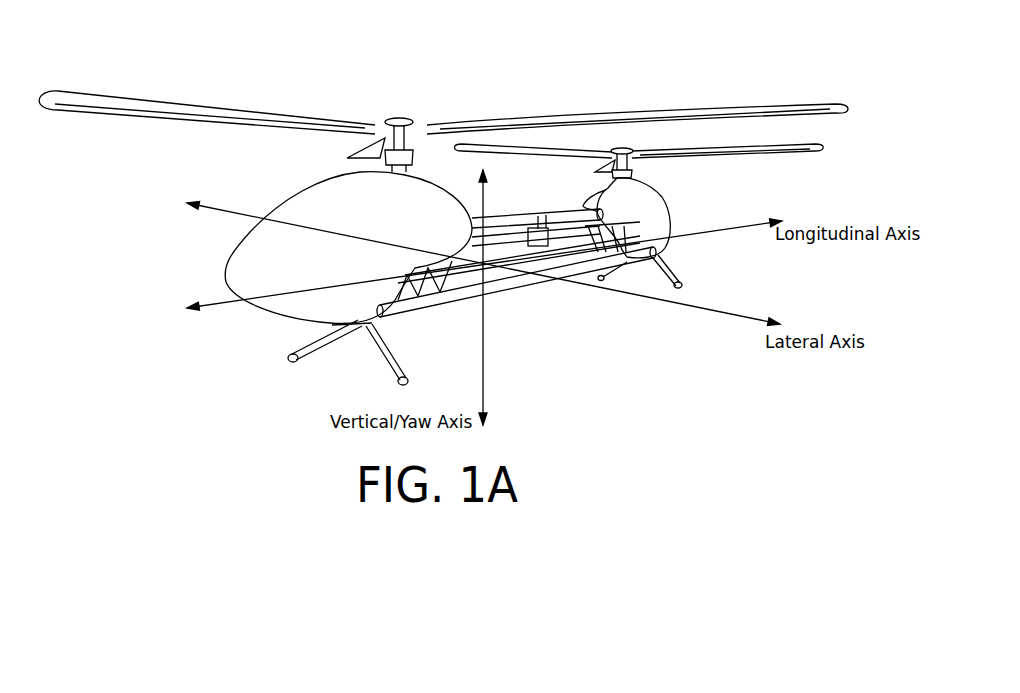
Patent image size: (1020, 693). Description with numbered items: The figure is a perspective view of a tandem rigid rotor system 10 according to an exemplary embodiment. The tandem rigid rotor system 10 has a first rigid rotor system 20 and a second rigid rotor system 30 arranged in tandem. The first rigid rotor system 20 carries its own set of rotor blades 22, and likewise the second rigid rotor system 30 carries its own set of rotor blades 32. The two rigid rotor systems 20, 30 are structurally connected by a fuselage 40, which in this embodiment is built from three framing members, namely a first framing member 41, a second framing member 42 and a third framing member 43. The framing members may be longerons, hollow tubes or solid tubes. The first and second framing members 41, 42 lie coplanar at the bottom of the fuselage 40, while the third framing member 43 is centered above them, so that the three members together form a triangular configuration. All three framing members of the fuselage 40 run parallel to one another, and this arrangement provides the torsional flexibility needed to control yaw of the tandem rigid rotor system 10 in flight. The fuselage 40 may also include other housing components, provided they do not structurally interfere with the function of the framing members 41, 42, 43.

The tandem rigid rotor system 10 is at (583, 92).
The first rigid rotor system 20 is at (382, 105).
The rotor blades 22 is at (130, 99).
The second rigid rotor system 30 is at (641, 143).
The rotor blades 32 is at (727, 154).
The fuselage 40 is at (558, 300).
The first framing member 41 is at (427, 302).
The second framing member 42 is at (488, 267).
The third framing member 43 is at (506, 221).